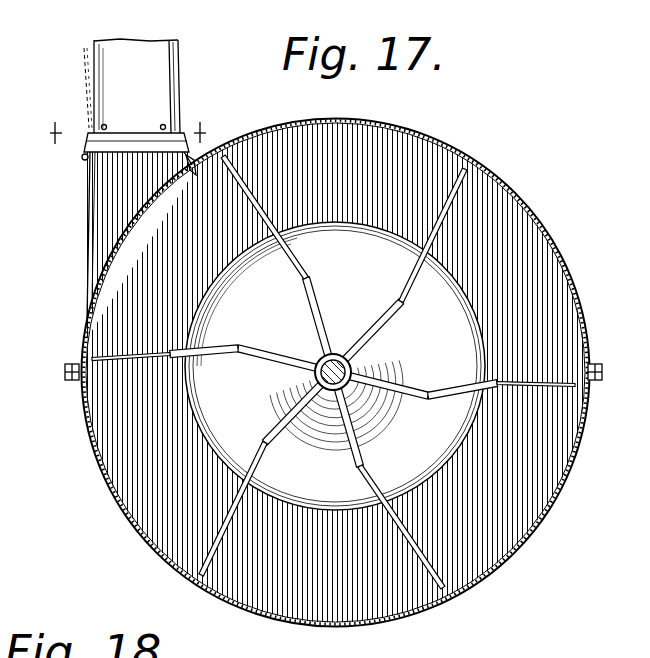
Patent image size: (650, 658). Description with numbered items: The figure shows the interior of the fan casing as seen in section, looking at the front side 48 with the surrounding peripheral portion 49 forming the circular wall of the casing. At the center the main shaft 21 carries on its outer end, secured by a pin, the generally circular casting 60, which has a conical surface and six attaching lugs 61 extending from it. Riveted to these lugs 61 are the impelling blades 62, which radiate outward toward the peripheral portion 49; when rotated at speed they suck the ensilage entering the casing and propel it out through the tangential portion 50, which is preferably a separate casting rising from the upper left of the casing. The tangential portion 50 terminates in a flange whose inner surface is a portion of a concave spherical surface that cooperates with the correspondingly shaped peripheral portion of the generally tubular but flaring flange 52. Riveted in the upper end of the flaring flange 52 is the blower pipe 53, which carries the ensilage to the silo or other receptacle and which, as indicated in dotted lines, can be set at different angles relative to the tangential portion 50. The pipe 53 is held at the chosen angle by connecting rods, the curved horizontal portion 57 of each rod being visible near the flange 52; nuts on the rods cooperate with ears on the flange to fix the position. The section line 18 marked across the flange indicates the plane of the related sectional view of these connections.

The section line 18— 18 is at (128, 132).
The main shaft 21 is at (337, 356).
The front side of the fan casing 48 is at (330, 588).
The peripheral portion of the fan casing 49 is at (385, 623).
The tangential portion 50 is at (90, 210).
The flaring flange 52 is at (92, 133).
The blower pipe 53 is at (161, 33).
The curved horizontal portion of connecting rod 57 is at (84, 160).
The circular casting 60 is at (335, 366).
The attaching lugs 61 is at (250, 392).
The impelling blades 62 is at (232, 163).